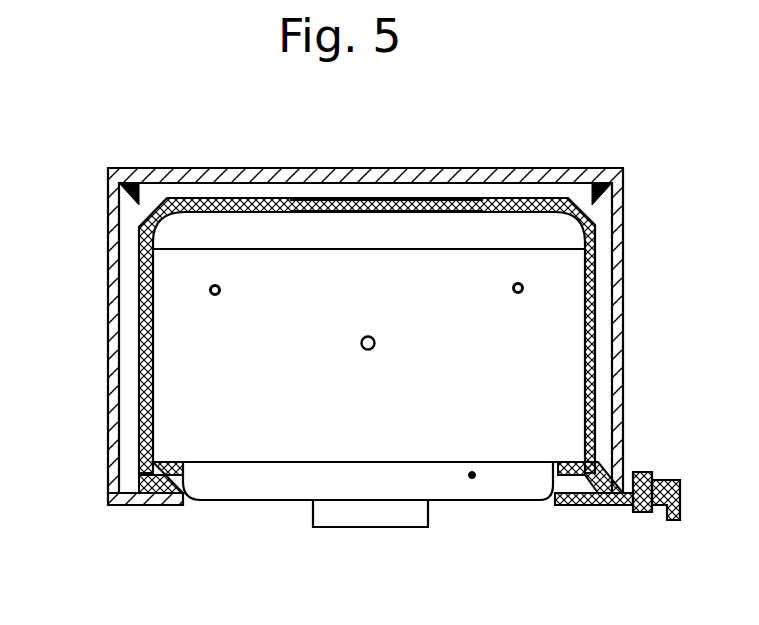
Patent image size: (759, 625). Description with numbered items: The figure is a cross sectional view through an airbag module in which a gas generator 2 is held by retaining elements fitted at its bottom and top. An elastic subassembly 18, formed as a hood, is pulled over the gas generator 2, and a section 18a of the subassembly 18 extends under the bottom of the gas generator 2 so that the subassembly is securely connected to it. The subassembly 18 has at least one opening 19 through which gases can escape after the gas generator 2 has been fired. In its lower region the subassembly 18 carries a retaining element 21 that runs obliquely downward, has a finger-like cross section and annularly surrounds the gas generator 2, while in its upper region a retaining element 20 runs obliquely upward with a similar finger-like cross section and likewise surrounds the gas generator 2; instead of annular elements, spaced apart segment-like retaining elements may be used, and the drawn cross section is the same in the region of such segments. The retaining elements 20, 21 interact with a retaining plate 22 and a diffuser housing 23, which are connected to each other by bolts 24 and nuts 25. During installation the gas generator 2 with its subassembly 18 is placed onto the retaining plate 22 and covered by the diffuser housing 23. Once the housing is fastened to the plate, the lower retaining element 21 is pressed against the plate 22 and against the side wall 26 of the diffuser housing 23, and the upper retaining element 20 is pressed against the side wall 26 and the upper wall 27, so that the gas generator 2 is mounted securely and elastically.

The gas generator 2 is at (505, 488).
The elastic subassembly 18 is at (600, 283).
The section 18a is at (165, 507).
The opening 19 is at (427, 205).
The retaining element 20 is at (613, 170).
The retaining element 21 is at (597, 472).
The retaining plate 22 is at (583, 505).
The diffuser housing 23 is at (628, 385).
The bolts 24 is at (647, 512).
The nuts 25 is at (648, 478).
The side wall 26 is at (622, 218).
The upper wall 27 is at (575, 175).